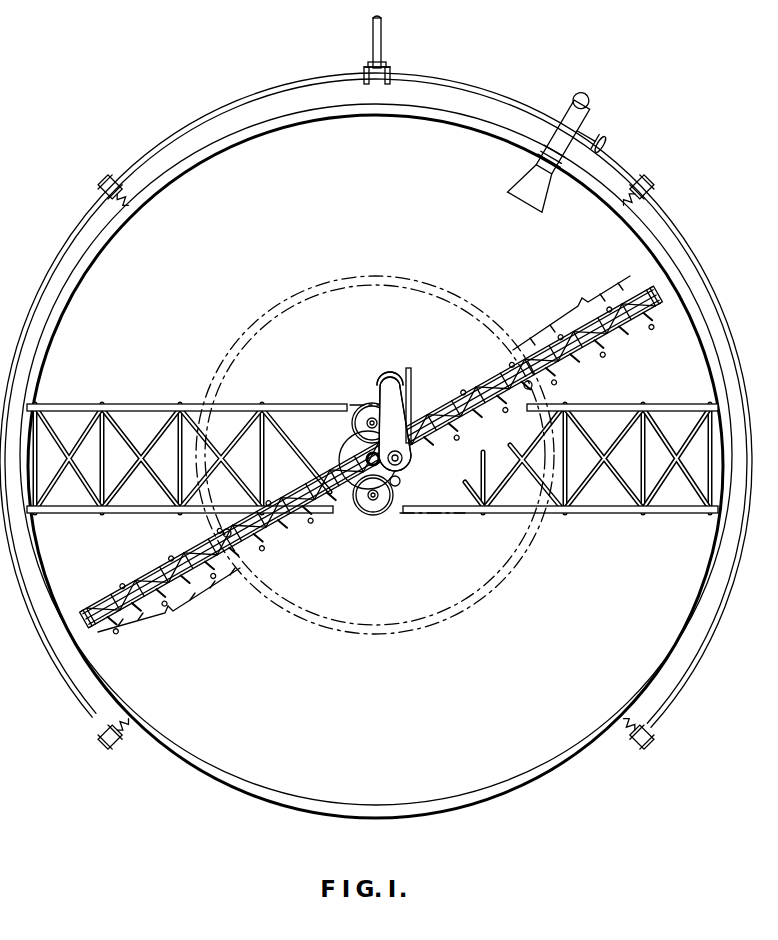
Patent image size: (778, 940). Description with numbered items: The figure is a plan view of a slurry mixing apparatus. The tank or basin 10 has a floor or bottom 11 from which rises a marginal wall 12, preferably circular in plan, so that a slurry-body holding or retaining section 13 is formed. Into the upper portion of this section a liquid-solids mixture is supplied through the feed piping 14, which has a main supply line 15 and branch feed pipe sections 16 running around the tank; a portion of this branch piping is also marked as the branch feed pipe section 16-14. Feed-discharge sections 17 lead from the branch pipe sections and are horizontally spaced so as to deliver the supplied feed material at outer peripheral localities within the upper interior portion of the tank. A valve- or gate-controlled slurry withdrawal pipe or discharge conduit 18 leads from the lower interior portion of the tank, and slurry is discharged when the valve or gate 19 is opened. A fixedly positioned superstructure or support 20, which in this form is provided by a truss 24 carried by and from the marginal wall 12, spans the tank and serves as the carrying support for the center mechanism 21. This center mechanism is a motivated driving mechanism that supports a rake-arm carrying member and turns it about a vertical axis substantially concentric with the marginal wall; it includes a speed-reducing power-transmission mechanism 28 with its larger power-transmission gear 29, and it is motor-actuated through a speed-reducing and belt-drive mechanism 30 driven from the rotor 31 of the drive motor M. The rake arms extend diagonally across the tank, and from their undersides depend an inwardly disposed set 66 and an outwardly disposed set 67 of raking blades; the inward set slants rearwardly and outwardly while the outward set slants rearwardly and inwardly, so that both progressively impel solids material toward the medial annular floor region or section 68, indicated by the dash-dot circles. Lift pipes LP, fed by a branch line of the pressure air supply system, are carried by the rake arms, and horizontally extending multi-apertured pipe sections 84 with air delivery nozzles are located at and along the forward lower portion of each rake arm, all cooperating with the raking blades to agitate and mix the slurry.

The tank or basin 10 is at (268, 833).
The floor or bottom 11 is at (245, 828).
The marginal wall 12 is at (318, 815).
The slurry-body holding or retaining section 13 is at (248, 287).
The feed piping 14 is at (258, 72).
The main supply line 15 is at (370, 46).
The branch feed pipe section 16 is at (230, 99).
The branch feed pipe section of feed piping 16-14 is at (632, 168).
The feed-discharge section 17 is at (130, 210).
The slurry withdrawal pipe or discharge conduit 18 is at (600, 93).
The valve or gate 19 is at (575, 104).
The superstructure or support 20 is at (242, 382).
The center mechanism 21 is at (364, 410).
The truss 24 is at (305, 402).
The speed-reducing power-transmission mechanism 28 is at (350, 448).
The power-transmission gear 29 is at (375, 514).
The speed-reducing and belt-drive mechanism 30 is at (394, 427).
The rotor 31 is at (383, 383).
The drive motor M is at (389, 376).
The inwardly disposed set of raking blades 66 is at (468, 371).
The outwardly disposed set of raking blades 67 is at (380, 207).
The medial annular floor region or section 68 is at (378, 281).
The multi-apertured pipe section 84 is at (590, 345).
The lift tube or pipe LP is at (532, 389).